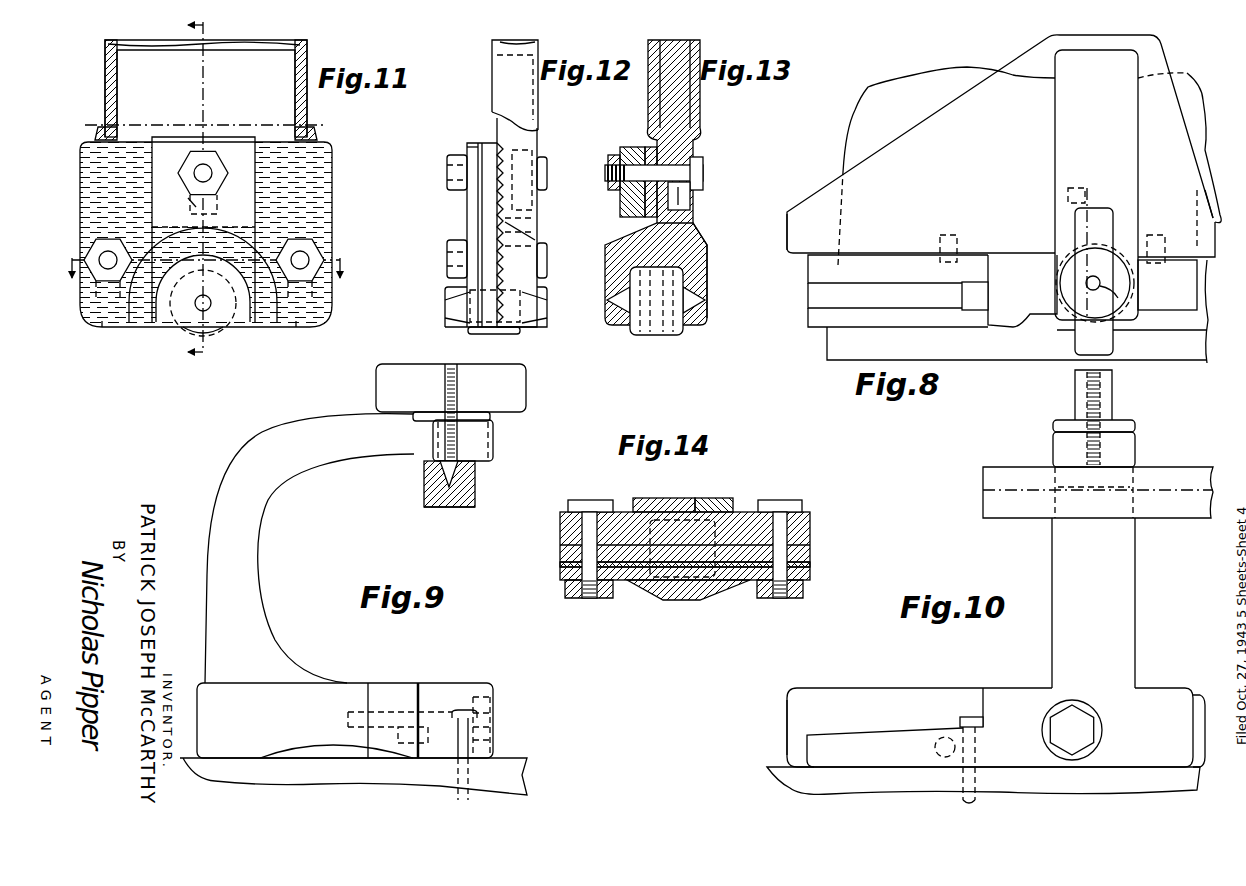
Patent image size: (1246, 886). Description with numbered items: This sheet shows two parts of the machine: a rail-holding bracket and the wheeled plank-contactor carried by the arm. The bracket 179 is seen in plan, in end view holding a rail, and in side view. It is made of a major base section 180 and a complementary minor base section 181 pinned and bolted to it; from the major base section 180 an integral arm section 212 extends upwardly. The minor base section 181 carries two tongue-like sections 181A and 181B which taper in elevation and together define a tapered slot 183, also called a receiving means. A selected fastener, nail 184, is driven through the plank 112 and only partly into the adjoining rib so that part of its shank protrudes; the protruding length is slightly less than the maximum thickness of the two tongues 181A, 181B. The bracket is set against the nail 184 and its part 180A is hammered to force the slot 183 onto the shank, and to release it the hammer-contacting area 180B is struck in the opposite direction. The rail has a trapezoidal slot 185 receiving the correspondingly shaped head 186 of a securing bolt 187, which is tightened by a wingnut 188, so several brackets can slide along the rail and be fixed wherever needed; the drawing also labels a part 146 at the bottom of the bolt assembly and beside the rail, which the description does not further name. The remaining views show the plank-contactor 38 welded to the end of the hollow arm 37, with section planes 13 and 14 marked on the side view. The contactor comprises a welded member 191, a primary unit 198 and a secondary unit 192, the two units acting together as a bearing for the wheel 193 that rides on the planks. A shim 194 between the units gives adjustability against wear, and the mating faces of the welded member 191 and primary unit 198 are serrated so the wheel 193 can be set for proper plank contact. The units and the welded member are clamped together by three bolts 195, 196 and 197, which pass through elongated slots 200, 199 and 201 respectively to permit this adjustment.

In FIG. 11, the plane 13— 13 is at (211, 196).
In FIG. 11, the plane 14— 14 is at (205, 269).
In FIG. 12, the hollow arm 37 is at (540, 45).
In FIG. 13, the hollow arm 37 is at (650, 47).
In FIG. 11, the plank-contactor 38 is at (318, 177).
In FIG. 8, the plank 112 is at (925, 78).
In FIG. 9, the plank 112 is at (353, 773).
In FIG. 10, the plank 112 is at (790, 777).
In FIG. 9, the plate 146 is at (462, 509).
In FIG. 10, the plate 146 is at (1005, 503).
In FIG. 9, the bracket 179 is at (264, 466).
In FIG. 8, the major base section 180 is at (1001, 177).
In FIG. 9, the major base section 180 is at (345, 720).
In FIG. 10, the major base section 180 is at (990, 642).
In FIG. 8, the part of the bracket 180A is at (1212, 193).
In FIG. 10, the part of the bracket 180A is at (1210, 675).
In FIG. 8, the hammer-contacting area 180B is at (785, 215).
In FIG. 9, the hammer-contacting area 180B is at (390, 695).
In FIG. 10, the hammer-contacting area 180B is at (785, 718).
In FIG. 8, the minor base section 181 is at (1092, 291).
In FIG. 9, the minor base section 181 is at (443, 695).
In FIG. 10, the minor base section 181 is at (1042, 724).
In FIG. 8, the tongue-like section 181A is at (820, 266).
In FIG. 9, the tongue-like section 181A is at (437, 752).
In FIG. 8, the tongue-like section 181B is at (822, 325).
In FIG. 9, the tongue-like section 181B is at (483, 728).
In FIG. 10, the tongue-like section 181B is at (885, 747).
In FIG. 8, the slot 183 is at (812, 293).
In FIG. 8, the nail 184 is at (976, 305).
In FIG. 9, the nail 184 is at (463, 797).
In FIG. 10, the nail 184 is at (965, 715).
In FIG. 9, the slot 185 is at (475, 477).
In FIG. 9, the head 186 is at (458, 474).
In FIG. 10, the head 186 is at (1133, 482).
In FIG. 8, the securing bolt 187 is at (1132, 312).
In FIG. 9, the securing bolt 187 is at (451, 403).
In FIG. 10, the securing bolt 187 is at (1100, 453).
In FIG. 8, the wingnut 188 is at (1103, 355).
In FIG. 9, the wingnut 188 is at (378, 392).
In FIG. 10, the wingnut 188 is at (1113, 365).
In FIG. 12, the welded member 191 is at (500, 133).
In FIG. 13, the welded member 191 is at (695, 126).
In FIG. 14, the welded member 191 is at (625, 512).
In FIG. 11, the secondary unit 192 is at (318, 204).
In FIG. 12, the secondary unit 192 is at (467, 215).
In FIG. 13, the secondary unit 192 is at (616, 246).
In FIG. 14, the secondary unit 192 is at (700, 598).
In FIG. 12, the wheel 193 is at (517, 332).
In FIG. 13, the wheel 193 is at (655, 335).
In FIG. 14, the wheel 193 is at (668, 496).
In FIG. 14, the shim 194 is at (557, 565).
In FIG. 11, the bolt 195 is at (100, 256).
In FIG. 12, the bolt 195 is at (449, 251).
In FIG. 14, the bolt 195 is at (592, 500).
In FIG. 11, the bolt 196 is at (208, 170).
In FIG. 12, the bolt 196 is at (447, 172).
In FIG. 11, the bolt 197 is at (308, 255).
In FIG. 14, the bolt 197 is at (780, 500).
In FIG. 11, the primary unit 198 is at (218, 333).
In FIG. 12, the primary unit 198 is at (468, 152).
In FIG. 13, the primary unit 198 is at (695, 249).
In FIG. 14, the primary unit 198 is at (729, 500).
In FIG. 11, the slot 199 is at (195, 200).
In FIG. 13, the slot 199 is at (692, 196).
In FIG. 11, the slot 200 is at (106, 328).
In FIG. 11, the slot 201 is at (318, 308).
In FIG. 9, the arm section 212 is at (248, 566).